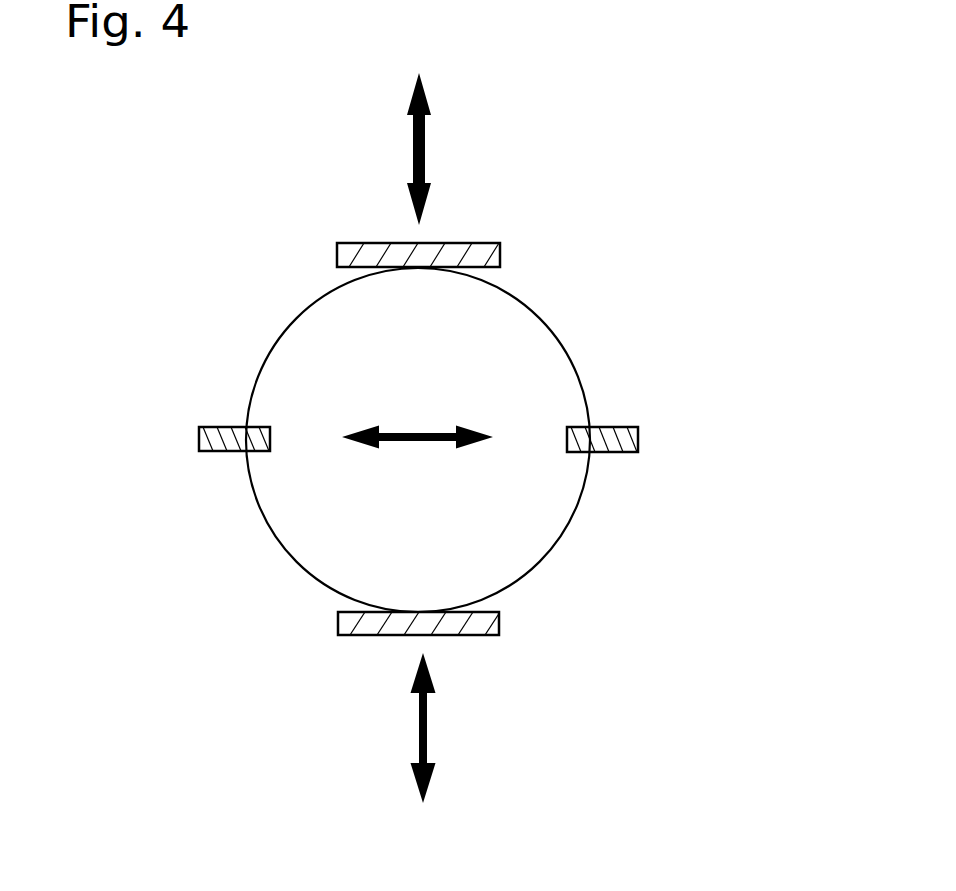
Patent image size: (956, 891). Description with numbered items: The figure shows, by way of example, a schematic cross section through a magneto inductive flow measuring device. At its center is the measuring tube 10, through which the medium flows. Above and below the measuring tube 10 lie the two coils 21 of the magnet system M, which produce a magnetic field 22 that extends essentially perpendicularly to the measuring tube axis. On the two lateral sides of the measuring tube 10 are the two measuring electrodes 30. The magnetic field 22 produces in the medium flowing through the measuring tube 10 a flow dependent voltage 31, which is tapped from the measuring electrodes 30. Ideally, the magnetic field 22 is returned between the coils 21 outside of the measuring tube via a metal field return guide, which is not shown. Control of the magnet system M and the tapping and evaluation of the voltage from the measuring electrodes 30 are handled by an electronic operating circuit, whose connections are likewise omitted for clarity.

The measuring tube 10 is at (580, 357).
The coils 21 is at (525, 240).
The magnetic field 22 is at (450, 438).
The measuring electrodes 30 is at (188, 439).
The flow dependent voltage 31 is at (417, 465).
The magnet system M is at (315, 236).